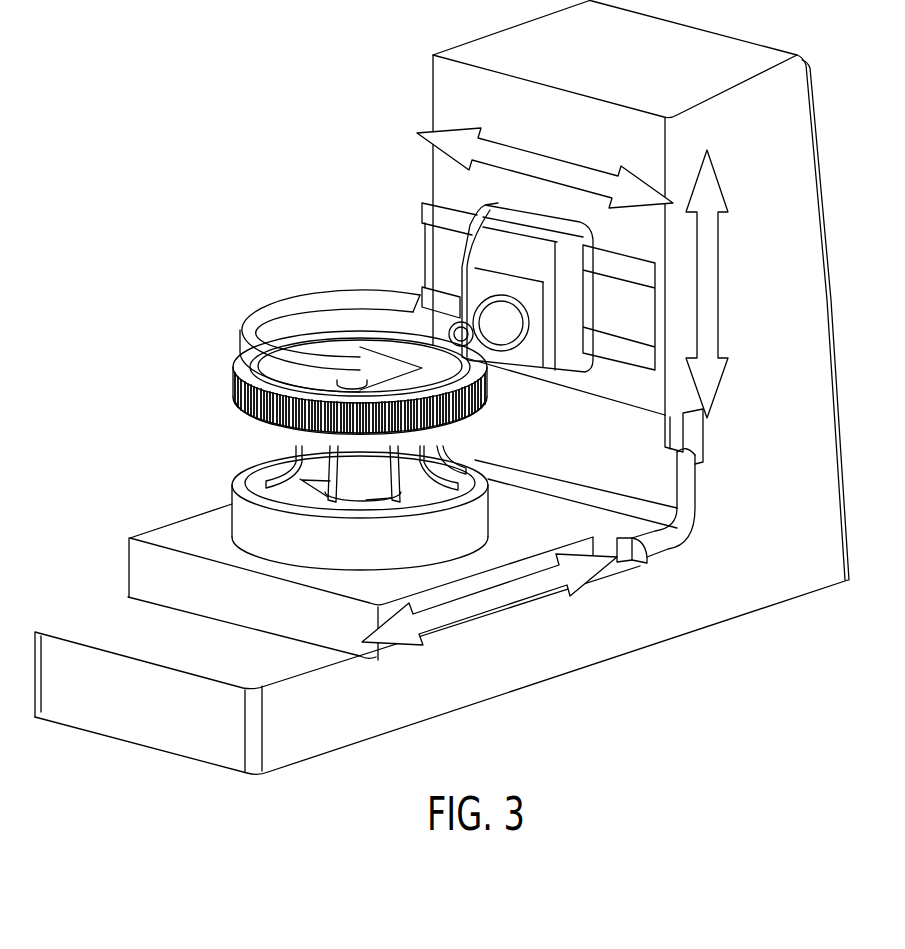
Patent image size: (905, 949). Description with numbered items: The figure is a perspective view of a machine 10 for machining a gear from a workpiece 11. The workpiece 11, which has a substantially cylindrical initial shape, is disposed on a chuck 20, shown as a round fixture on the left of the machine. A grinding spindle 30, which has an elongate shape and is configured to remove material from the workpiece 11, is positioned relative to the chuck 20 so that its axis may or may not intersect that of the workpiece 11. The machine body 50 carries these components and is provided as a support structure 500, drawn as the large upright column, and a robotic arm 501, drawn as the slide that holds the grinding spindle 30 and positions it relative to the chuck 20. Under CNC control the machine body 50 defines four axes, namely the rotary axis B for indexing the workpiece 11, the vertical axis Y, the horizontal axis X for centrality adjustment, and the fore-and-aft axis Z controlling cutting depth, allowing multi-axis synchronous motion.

The machine 10 is at (82, 731).
The workpiece 11 is at (231, 378).
The chuck 20 is at (250, 516).
The grinding spindle 30 is at (477, 313).
The machine body 50 is at (165, 743).
The support structure 500 is at (706, 628).
The robotic arm 501 is at (480, 213).